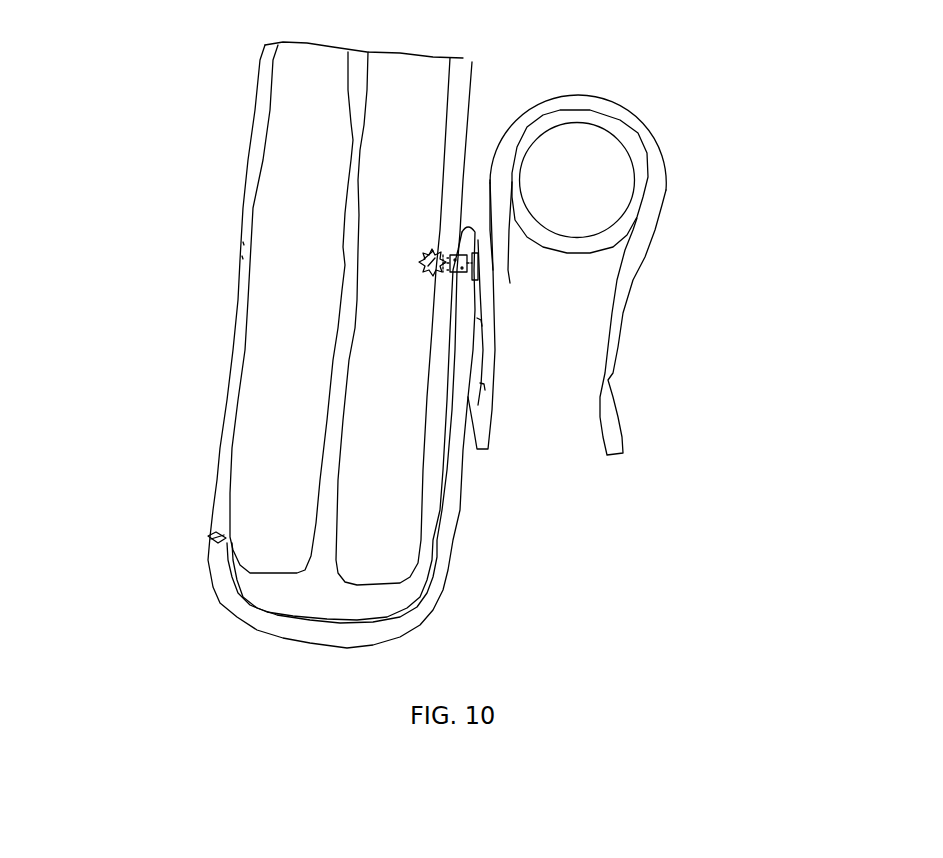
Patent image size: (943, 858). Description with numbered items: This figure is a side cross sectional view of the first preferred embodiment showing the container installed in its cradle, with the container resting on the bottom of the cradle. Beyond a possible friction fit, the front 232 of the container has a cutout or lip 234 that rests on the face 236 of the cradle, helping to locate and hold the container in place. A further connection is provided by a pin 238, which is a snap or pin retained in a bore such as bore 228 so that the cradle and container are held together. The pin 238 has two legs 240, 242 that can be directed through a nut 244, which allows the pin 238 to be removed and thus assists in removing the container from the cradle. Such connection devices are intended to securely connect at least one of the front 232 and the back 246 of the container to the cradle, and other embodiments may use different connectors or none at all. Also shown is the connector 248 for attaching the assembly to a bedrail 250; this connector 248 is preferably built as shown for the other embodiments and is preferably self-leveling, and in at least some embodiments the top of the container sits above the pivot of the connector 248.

The bore 228 is at (237, 248).
The front of the container 232 is at (200, 418).
The cutout or lip 234 is at (212, 538).
The face of cradle 236 is at (219, 537).
The pin 238 is at (478, 267).
The leg 240 is at (426, 249).
The leg 242 is at (420, 262).
The nut 244 is at (443, 245).
The back of the container 246 is at (492, 67).
The connector 248 is at (655, 113).
The bedrail 250 is at (642, 160).